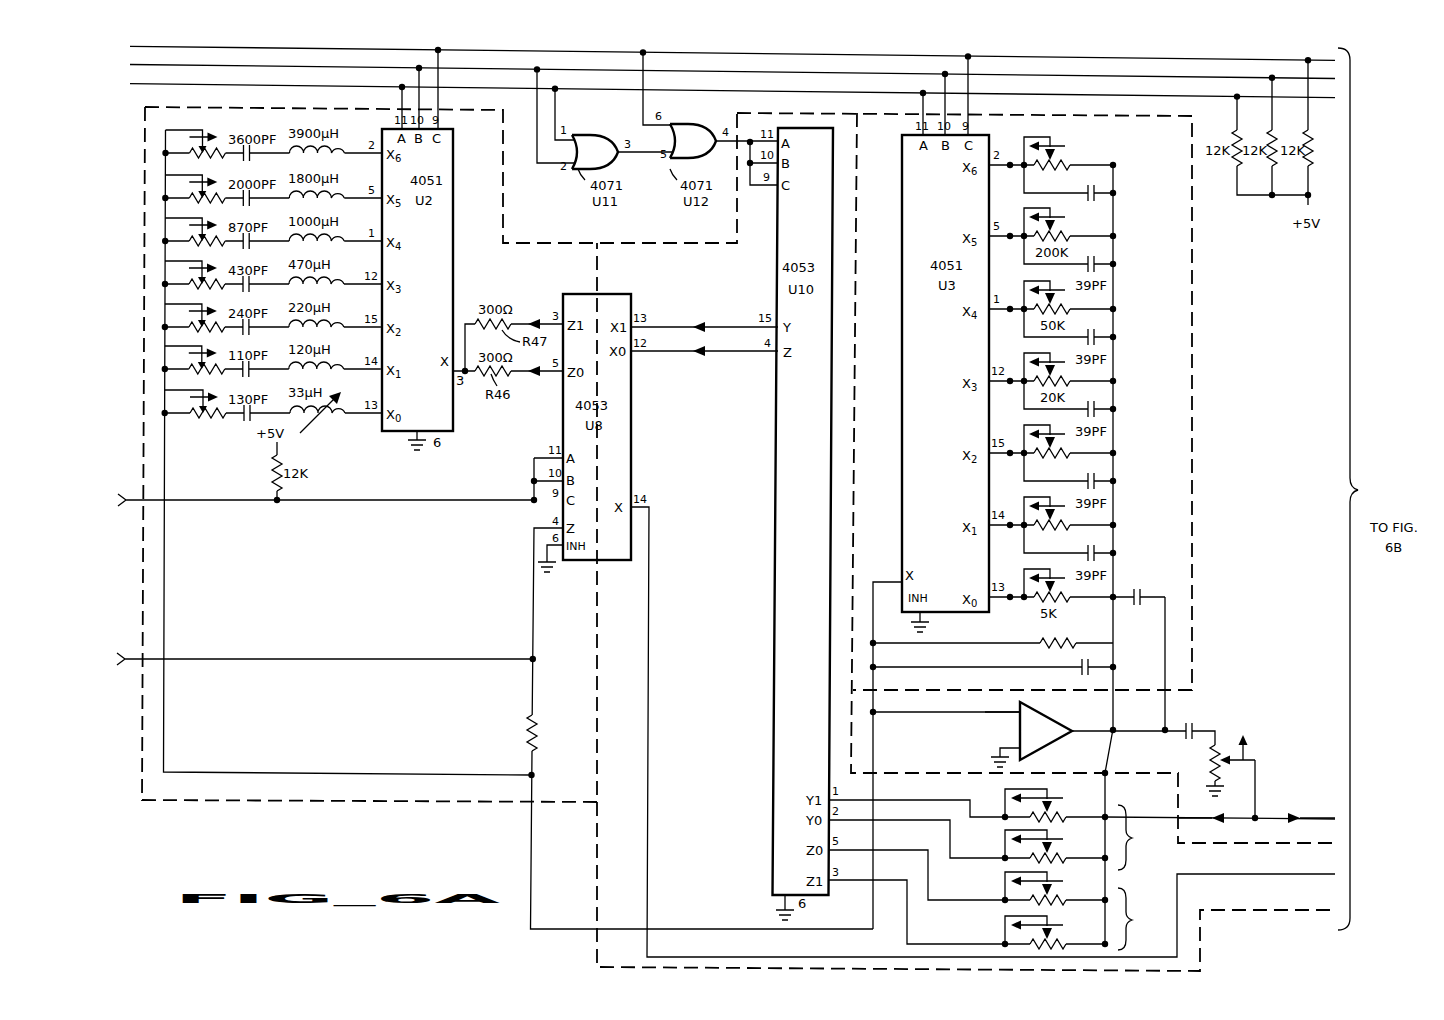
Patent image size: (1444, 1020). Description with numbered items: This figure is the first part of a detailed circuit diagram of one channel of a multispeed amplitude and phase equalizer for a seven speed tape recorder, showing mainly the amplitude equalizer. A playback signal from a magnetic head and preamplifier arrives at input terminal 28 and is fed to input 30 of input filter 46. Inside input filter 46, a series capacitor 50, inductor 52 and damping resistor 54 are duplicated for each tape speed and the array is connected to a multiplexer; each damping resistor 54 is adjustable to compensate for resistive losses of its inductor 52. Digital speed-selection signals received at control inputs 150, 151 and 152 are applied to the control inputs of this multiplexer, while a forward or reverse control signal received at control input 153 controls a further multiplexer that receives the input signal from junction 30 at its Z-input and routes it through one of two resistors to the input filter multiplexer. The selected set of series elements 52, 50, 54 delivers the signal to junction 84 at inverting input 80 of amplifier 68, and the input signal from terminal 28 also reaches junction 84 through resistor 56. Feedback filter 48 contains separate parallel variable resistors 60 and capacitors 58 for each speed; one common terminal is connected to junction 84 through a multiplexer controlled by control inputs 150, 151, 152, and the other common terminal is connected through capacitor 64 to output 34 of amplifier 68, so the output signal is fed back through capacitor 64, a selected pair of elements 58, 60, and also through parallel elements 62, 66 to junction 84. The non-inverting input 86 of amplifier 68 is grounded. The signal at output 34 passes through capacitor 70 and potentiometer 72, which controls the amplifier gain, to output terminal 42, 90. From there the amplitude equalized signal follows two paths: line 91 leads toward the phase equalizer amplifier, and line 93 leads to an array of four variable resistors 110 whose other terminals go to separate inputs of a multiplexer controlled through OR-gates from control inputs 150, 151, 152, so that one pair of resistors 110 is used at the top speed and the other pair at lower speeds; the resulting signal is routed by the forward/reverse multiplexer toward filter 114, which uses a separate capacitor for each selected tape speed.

The control input 150 is at (120, 52).
The control input 151 is at (120, 70).
The control input 152 is at (120, 90).
The control input 153 is at (117, 497).
The input terminal 28 is at (123, 657).
The input of input filter 30 is at (530, 658).
The output of amplifier 34 is at (1162, 726).
The output terminal 42 is at (1256, 822).
The output line 90 is at (1256, 828).
The input filter 46 is at (258, 796).
The feedback filter 48 is at (1185, 299).
The capacitor 50 is at (243, 425).
The inductor 52 is at (330, 422).
The damping resistor 54 is at (200, 422).
The resistor 56 is at (526, 736).
The capacitor 58 is at (1095, 191).
The variable resistor 60 is at (1058, 163).
The parallel feedback element 62 is at (1040, 640).
The capacitor 64 is at (1140, 592).
The parallel feedback element 66 is at (1092, 666).
The amplifier 68 is at (1055, 721).
The capacitor 70 is at (1200, 729).
The potentiometer 72 is at (1218, 770).
The inverting input 80 is at (1010, 718).
The junction 84 is at (873, 714).
The non-inverting input 86 is at (1018, 754).
The line 91 is at (1312, 816).
The line 93 is at (1196, 815).
The variable resistor 110 is at (1057, 812).
The filter 114 is at (964, 926).